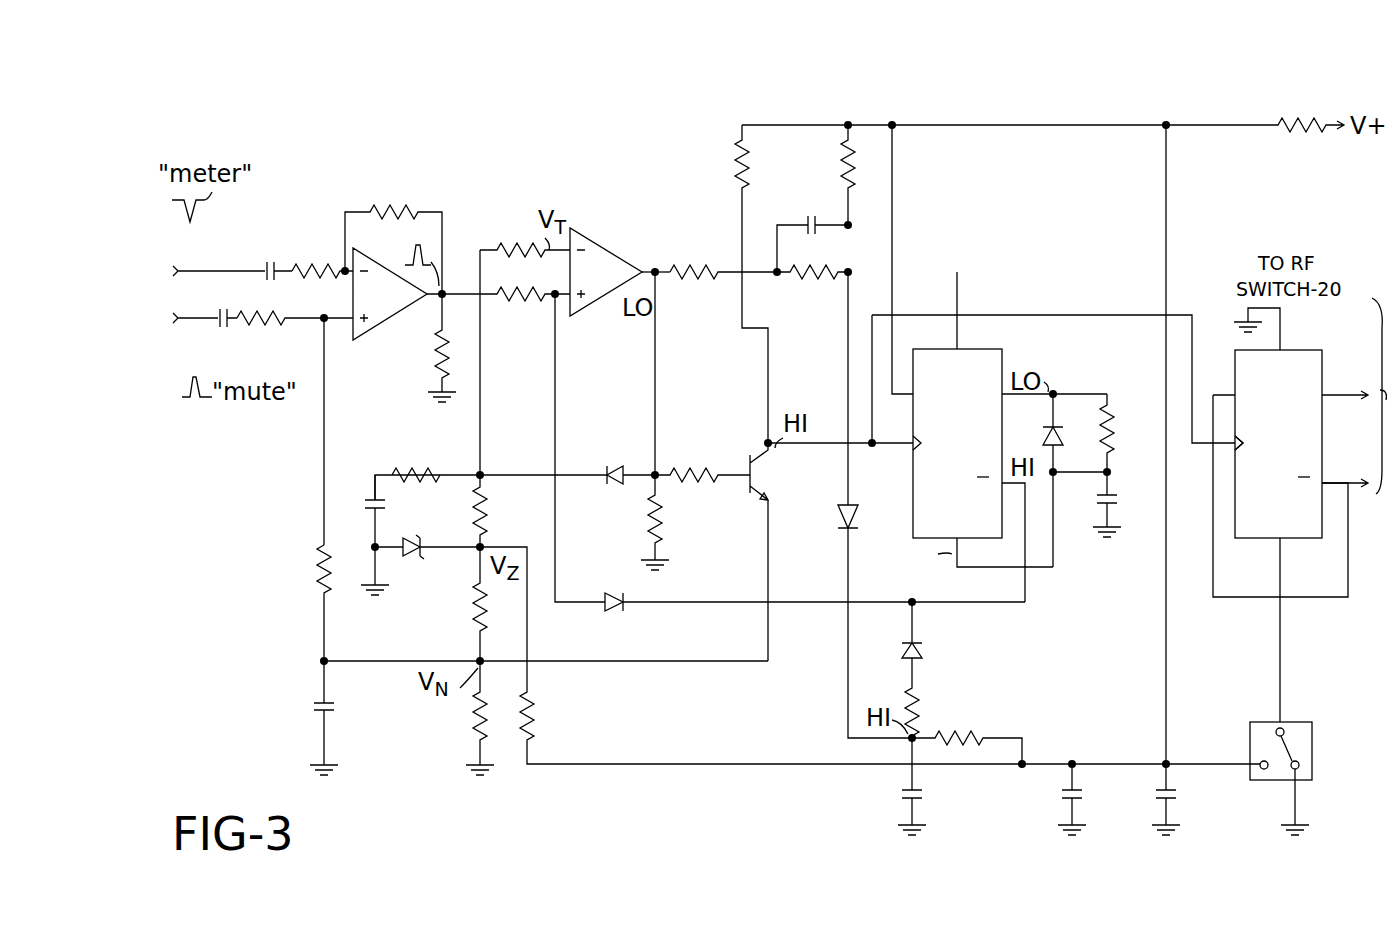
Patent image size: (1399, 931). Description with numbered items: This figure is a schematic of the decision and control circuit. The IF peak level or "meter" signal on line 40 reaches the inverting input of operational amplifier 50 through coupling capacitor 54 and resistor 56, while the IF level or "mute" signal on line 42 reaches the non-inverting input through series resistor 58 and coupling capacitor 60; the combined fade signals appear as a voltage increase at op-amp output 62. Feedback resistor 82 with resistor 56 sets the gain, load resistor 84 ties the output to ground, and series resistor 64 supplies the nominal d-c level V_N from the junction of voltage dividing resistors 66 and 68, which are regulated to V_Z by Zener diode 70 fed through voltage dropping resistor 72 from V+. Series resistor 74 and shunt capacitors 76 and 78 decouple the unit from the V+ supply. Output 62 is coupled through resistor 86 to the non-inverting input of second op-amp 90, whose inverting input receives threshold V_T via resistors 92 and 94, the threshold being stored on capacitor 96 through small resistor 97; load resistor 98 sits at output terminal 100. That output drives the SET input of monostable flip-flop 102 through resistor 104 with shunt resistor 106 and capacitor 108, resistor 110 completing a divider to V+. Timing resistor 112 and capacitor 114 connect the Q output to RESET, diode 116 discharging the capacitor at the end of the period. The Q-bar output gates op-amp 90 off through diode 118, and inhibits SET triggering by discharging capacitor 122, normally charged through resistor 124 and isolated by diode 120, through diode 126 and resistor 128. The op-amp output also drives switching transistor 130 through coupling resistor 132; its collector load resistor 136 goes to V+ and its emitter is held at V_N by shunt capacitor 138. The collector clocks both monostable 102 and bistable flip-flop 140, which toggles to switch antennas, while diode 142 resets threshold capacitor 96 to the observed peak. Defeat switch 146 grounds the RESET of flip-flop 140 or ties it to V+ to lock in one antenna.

The line 40 is at (184, 280).
The line 42 is at (183, 328).
The operational amplifier 50 is at (364, 336).
The coupling capacitor 54 is at (266, 254).
The resistor 56 is at (332, 254).
The series resistor 58 is at (278, 322).
The coupling capacitor 60 is at (228, 322).
The op-amp output 62 is at (440, 302).
The series resistor 64 is at (318, 574).
The voltage dividing resistor 66 is at (474, 616).
The voltage dividing resistor 68 is at (474, 712).
The Zener diode 70 is at (418, 560).
The voltage dropping resistor 72 is at (536, 720).
The series resistor 74 is at (1284, 122).
The shunt capacitor 76 is at (1066, 794).
The shunt capacitor 78 is at (1158, 794).
The feedback resistor 82 is at (394, 208).
The load resistor 84 is at (438, 382).
The resistor 86 is at (530, 304).
The second op-amp 90 is at (600, 232).
The resistor 92 is at (508, 238).
The resistor 94 is at (486, 510).
The capacitor 96 is at (385, 510).
The resistor 97 is at (410, 466).
The load resistor 98 is at (650, 518).
The output terminal 100 is at (656, 268).
The monostable flip-flop 102 is at (974, 348).
The resistor 104 is at (696, 286).
The shunt resistor 106 is at (808, 284).
The capacitor 108 is at (808, 212).
The resistor 110 is at (842, 164).
The resistor 112 is at (1106, 416).
The capacitor 114 is at (1108, 508).
The diode 116 is at (1048, 436).
The diode 118 is at (614, 620).
The diode 120 is at (846, 504).
The capacitor 122 is at (904, 794).
The resistor 124 is at (982, 732).
The diode 126 is at (922, 648).
The resistor 128 is at (926, 686).
The transistor 130 is at (752, 428).
The coupling resistor 132 is at (710, 458).
The load resistor 136 is at (736, 160).
The shunt capacitor 138 is at (312, 701).
The flip-flop 140 is at (1294, 346).
The diode 142 is at (614, 464).
The defeat switch 146 is at (1312, 722).